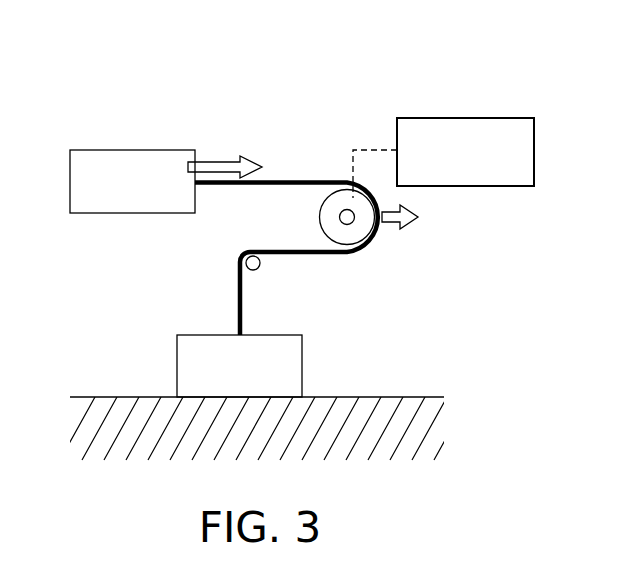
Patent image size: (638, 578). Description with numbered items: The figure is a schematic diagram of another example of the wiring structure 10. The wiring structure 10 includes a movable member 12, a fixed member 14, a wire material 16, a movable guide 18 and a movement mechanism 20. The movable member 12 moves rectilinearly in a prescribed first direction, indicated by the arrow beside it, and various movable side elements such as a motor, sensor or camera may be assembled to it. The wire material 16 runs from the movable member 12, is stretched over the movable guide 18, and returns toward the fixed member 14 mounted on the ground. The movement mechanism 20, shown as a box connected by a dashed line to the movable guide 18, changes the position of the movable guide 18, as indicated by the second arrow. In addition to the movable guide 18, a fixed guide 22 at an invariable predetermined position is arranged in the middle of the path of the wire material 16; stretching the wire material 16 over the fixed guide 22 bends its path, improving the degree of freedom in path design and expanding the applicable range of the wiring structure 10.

The wiring structure 10 is at (175, 118).
The movable member 12 is at (104, 150).
The fixed member 14 is at (195, 335).
The wire material 16 is at (283, 181).
The movable guide 18 is at (320, 216).
The movement mechanism 20 is at (478, 118).
The fixed guide 22 is at (261, 268).